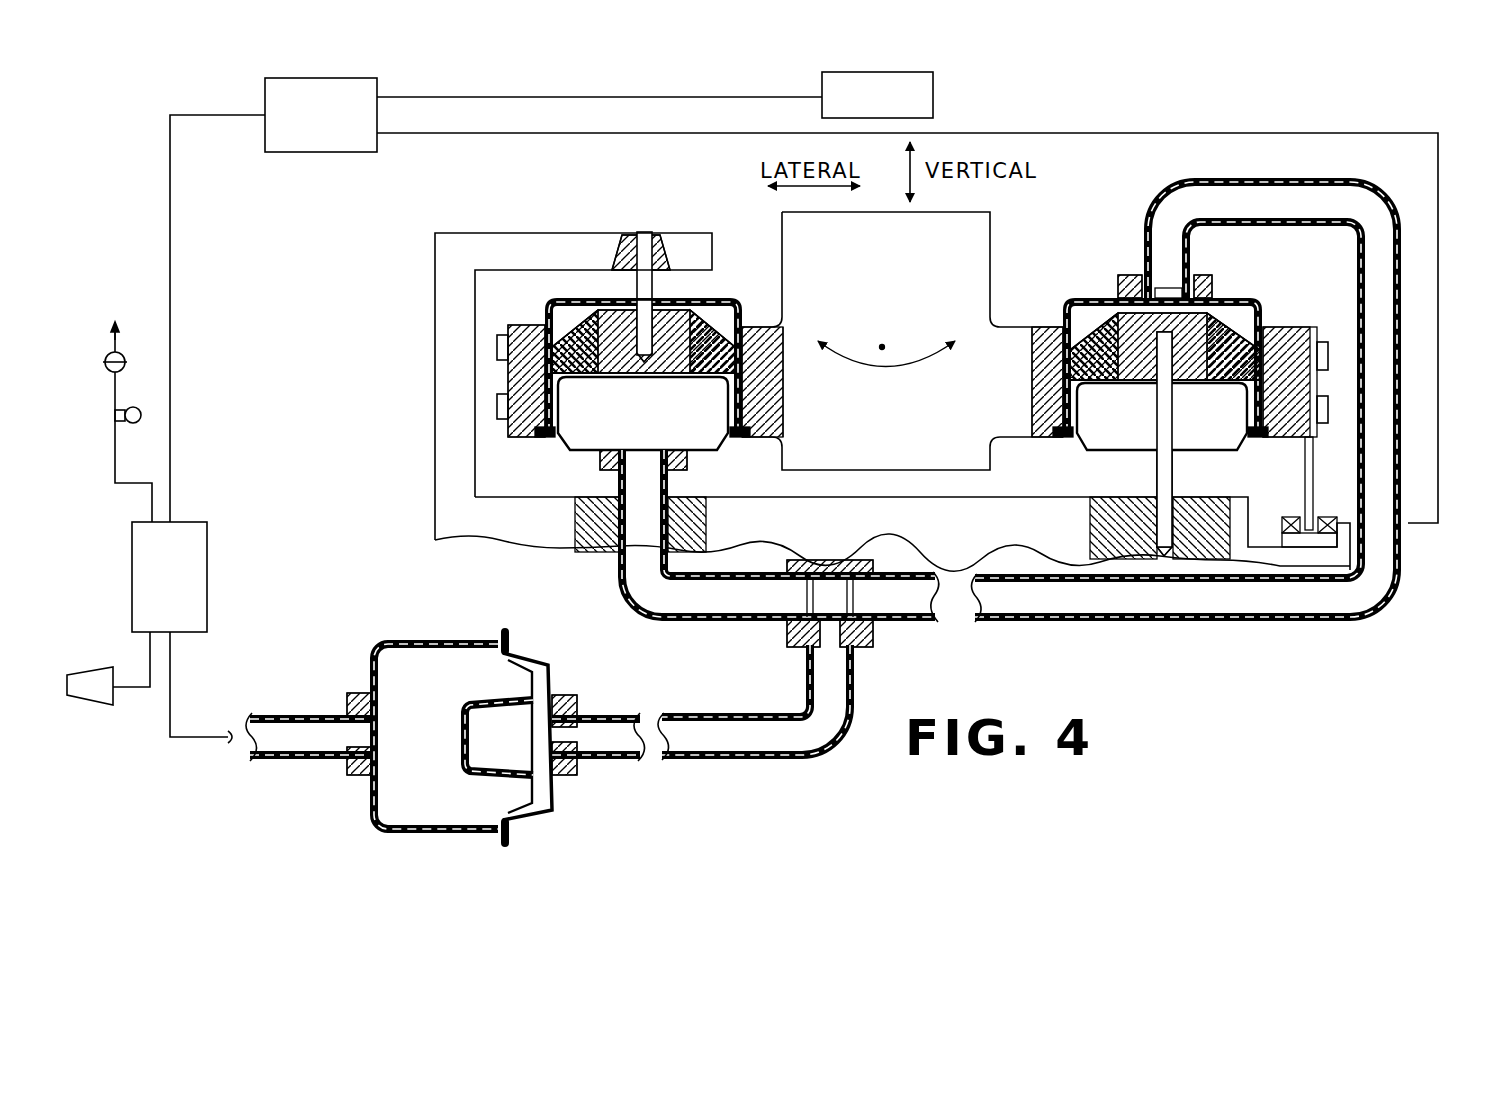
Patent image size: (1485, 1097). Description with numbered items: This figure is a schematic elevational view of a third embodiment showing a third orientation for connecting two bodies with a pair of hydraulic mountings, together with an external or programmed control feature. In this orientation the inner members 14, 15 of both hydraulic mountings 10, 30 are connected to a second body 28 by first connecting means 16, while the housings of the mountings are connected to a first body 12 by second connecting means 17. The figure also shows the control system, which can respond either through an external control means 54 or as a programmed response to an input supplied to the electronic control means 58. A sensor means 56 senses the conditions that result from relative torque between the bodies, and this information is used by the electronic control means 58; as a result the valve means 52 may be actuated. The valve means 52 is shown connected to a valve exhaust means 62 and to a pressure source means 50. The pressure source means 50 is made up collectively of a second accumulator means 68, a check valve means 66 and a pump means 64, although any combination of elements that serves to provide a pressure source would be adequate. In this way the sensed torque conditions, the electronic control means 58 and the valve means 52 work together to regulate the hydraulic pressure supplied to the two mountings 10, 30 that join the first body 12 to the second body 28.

The hydraulic mounting 10 is at (596, 363).
The first body 12 is at (906, 284).
The inner member 14 is at (562, 330).
The inner member 15 is at (1216, 326).
The first connecting means 16 is at (660, 283).
The second connecting means 17 is at (497, 347).
The second body 28 is at (902, 533).
The hydraulic mounting 30 is at (1255, 386).
The pressure source means 50 is at (752, 413).
The valve means 52 is at (188, 572).
The external control means 54 is at (905, 108).
The sensor means 56 is at (1332, 538).
The electronic control means 58 is at (333, 120).
The valve exhaust means 62 is at (90, 692).
The pump means 64 is at (111, 300).
The check valve means 66 is at (138, 342).
The second accumulator means 68 is at (152, 397).